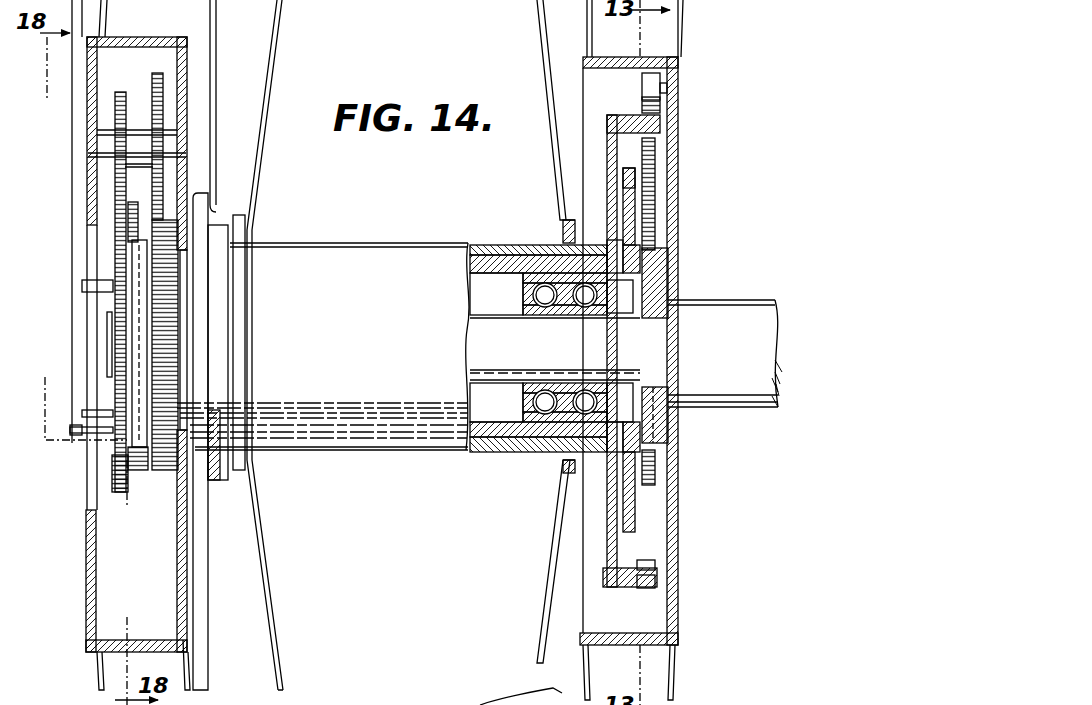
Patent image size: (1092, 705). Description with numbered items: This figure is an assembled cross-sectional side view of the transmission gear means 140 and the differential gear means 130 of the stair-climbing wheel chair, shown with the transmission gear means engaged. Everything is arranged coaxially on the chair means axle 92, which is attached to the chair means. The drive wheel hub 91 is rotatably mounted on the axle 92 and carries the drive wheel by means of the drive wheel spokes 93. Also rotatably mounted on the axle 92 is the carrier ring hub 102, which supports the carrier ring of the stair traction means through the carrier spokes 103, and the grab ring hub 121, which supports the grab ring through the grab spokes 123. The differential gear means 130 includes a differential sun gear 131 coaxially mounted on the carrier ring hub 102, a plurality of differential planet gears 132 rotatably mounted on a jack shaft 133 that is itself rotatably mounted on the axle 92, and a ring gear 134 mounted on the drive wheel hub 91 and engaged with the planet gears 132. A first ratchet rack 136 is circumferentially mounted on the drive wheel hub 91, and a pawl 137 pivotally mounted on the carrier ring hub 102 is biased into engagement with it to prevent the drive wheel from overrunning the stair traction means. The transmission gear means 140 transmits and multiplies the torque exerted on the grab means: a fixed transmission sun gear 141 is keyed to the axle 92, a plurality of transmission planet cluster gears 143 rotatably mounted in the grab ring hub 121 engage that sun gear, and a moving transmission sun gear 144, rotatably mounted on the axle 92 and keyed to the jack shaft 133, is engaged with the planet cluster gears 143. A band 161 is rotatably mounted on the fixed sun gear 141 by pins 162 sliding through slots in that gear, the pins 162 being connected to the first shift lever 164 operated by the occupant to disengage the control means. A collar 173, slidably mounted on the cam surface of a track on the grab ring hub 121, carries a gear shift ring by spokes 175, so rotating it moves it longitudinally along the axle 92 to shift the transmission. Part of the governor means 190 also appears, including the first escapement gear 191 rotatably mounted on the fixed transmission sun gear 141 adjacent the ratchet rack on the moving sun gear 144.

The drive wheel hub 91 is at (395, 247).
The chair means axle 92 is at (730, 310).
The drive wheel spokes 93 is at (270, 78).
The carrier ring hub 102 is at (680, 150).
The carrier spokes 103 is at (591, 12).
The grab ring hub 121 is at (183, 545).
The grab spokes 123 is at (97, 680).
The differential gear means 130 is at (690, 456).
The differential sun gear 131 is at (655, 268).
The differential planet gears 132 is at (650, 203).
The jack shaft 133 is at (502, 265).
The ring gear 134 is at (608, 122).
The first ratchet rack 136 is at (652, 590).
The pawl 137 is at (655, 82).
The transmission gear means 140 is at (227, 74).
The fixed transmission sun gear 141 is at (113, 476).
The transmission planet cluster gears 143 is at (135, 132).
The moving transmission sun gear 144 is at (148, 475).
The band 161 is at (140, 470).
The pins 162 is at (100, 283).
The first shift lever 164 is at (78, 232).
The collar 173 is at (200, 195).
The spokes 175 is at (210, 650).
The governor means 190 is at (443, 703).
The first escapement gear 191 is at (135, 200).